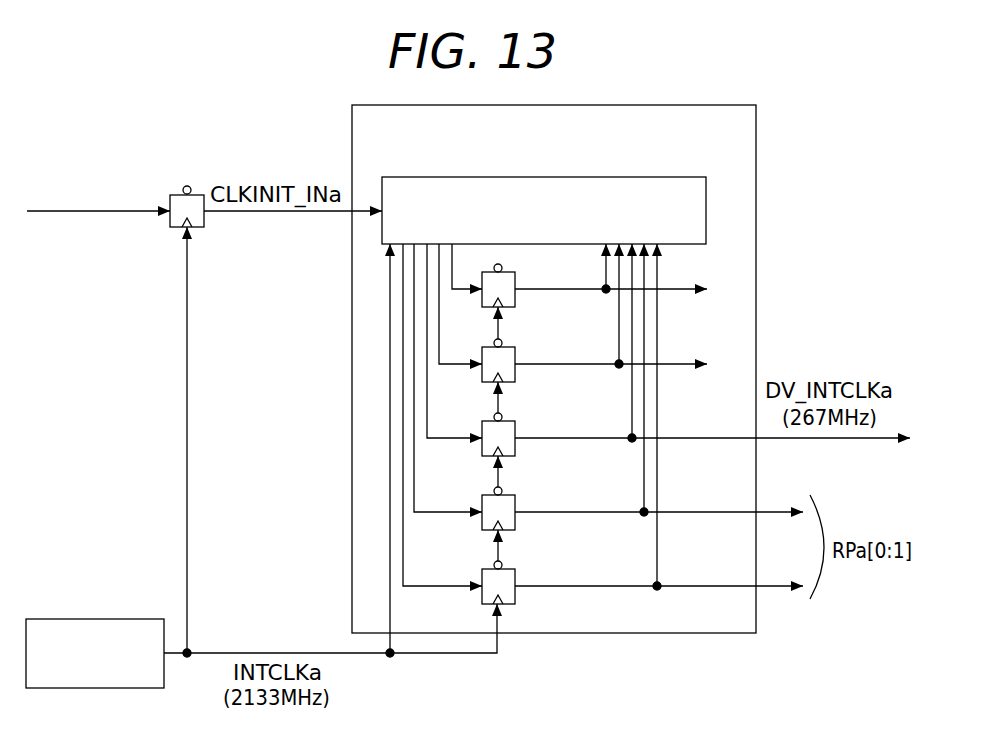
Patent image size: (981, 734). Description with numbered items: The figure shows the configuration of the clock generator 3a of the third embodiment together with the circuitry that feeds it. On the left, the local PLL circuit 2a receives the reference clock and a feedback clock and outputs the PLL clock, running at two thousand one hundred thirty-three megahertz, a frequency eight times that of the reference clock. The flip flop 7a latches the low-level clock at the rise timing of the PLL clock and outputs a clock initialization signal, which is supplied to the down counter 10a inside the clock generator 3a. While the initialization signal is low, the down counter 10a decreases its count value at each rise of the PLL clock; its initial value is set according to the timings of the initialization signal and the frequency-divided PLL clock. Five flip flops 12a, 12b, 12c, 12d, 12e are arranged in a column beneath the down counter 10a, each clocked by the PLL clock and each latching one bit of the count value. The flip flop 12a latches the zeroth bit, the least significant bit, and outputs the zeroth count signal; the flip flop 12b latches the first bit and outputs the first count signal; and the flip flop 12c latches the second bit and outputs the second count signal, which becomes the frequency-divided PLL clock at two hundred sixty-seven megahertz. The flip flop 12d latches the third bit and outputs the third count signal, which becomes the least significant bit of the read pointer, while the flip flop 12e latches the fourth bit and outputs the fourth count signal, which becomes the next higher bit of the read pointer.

The clock generator 3a is at (706, 105).
The down counter 10a is at (640, 172).
The flip flop 7a is at (181, 186).
The local PLL circuit 2a is at (113, 618).
The flip flop 12a is at (494, 268).
The flip flop 12b is at (494, 343).
The flip flop 12c is at (494, 417).
The flip flop 12d is at (494, 491).
The flip flop 12e is at (494, 565).